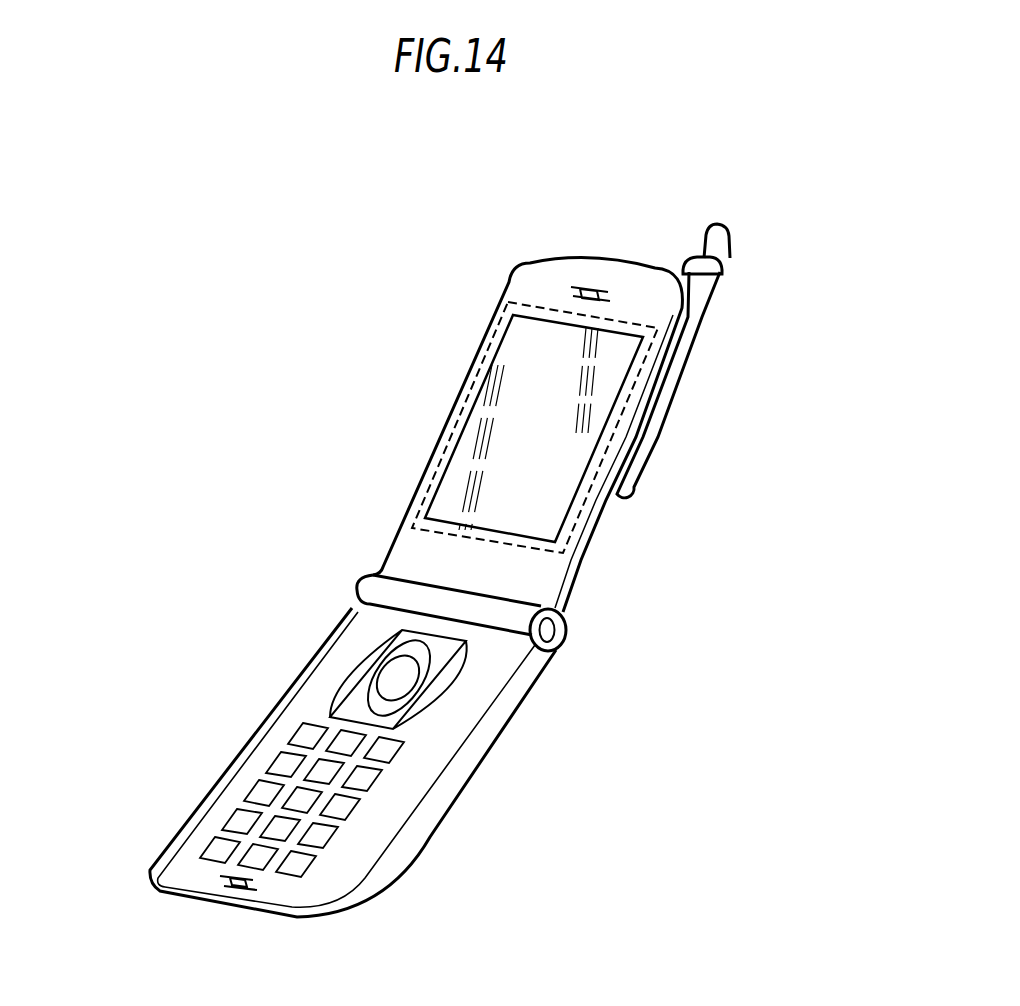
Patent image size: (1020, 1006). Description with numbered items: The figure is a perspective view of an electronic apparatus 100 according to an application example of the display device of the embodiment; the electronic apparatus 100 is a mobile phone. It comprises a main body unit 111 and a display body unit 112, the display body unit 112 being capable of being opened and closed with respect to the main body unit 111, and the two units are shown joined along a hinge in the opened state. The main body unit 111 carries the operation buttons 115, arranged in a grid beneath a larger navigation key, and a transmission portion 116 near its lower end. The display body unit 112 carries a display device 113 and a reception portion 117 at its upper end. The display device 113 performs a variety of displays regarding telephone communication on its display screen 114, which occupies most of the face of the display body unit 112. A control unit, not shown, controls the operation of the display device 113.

The electronic apparatus 100 is at (105, 690).
The main body unit 111 is at (327, 600).
The display body unit 112 is at (600, 613).
The display device 113 is at (460, 410).
The display screen 114 is at (556, 529).
The operation buttons 115 is at (397, 677).
The transmission portion 116 is at (232, 888).
The reception portion 117 is at (583, 288).